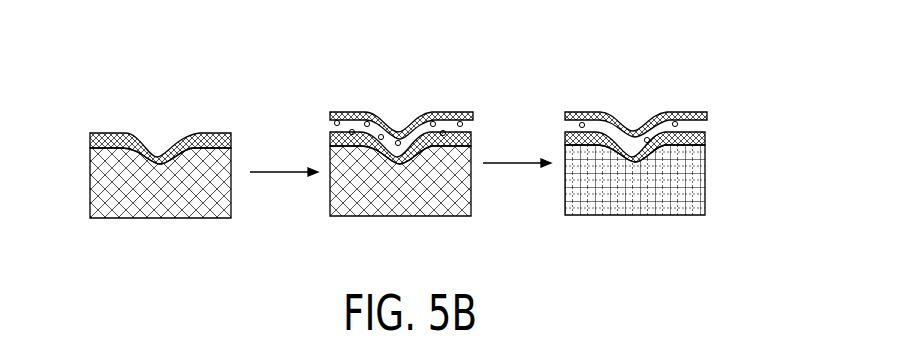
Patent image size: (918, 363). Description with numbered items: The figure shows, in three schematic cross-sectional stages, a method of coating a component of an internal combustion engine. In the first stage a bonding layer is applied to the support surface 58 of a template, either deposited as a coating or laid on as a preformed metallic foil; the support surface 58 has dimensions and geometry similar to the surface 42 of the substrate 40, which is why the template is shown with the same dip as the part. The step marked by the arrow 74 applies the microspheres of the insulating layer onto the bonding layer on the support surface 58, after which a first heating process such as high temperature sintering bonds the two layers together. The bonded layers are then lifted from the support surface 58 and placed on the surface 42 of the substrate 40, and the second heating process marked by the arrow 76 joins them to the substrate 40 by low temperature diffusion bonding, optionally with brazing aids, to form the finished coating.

The substrate 40 is at (680, 207).
The surface 42 is at (659, 210).
The support surface 58 is at (90, 149).
The arrow 74 is at (279, 176).
The arrow 76 is at (513, 167).